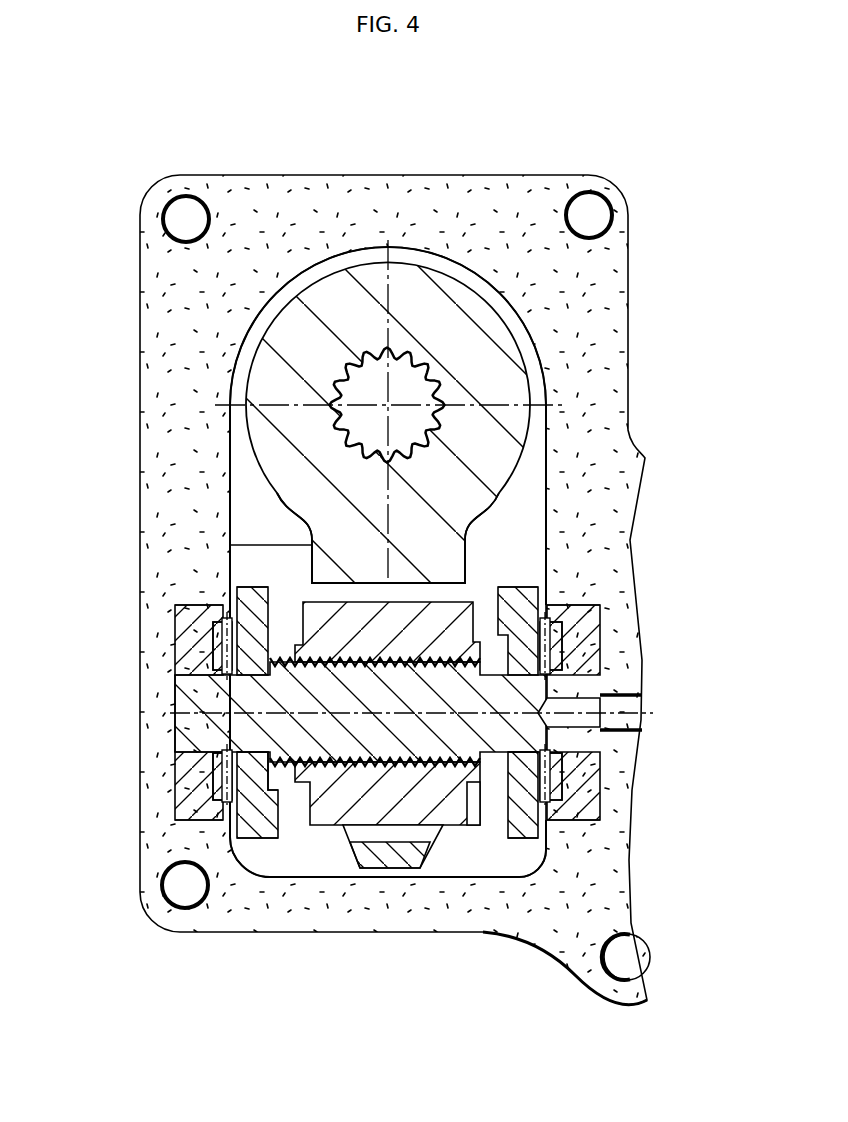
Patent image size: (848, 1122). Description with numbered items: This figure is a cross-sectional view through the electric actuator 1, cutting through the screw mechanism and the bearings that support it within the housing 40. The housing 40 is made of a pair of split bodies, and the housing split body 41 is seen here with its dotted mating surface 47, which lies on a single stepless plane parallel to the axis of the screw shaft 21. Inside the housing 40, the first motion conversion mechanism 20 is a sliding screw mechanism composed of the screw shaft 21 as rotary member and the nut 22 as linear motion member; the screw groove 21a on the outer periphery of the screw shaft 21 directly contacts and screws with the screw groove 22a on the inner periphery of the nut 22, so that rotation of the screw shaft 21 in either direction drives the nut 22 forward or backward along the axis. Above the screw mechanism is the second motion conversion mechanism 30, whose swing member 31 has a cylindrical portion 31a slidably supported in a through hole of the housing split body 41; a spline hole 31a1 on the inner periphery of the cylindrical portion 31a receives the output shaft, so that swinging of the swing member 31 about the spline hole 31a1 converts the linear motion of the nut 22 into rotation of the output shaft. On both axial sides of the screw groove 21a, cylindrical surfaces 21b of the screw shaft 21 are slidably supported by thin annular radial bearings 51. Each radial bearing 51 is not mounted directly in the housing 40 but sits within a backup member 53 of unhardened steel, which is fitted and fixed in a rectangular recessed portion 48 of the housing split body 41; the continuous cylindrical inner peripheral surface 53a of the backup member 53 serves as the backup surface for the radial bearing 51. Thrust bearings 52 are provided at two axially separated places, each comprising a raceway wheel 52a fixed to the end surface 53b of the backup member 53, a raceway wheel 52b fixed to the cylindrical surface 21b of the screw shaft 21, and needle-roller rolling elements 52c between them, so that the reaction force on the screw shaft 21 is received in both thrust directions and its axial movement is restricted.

The electric actuator 1 is at (416, 550).
The first motion conversion mechanism 20 is at (327, 828).
The screw shaft 21 is at (396, 759).
The screw groove 21a is at (355, 655).
The cylindrical surface 21b is at (216, 764).
The nut 22 is at (367, 820).
The screw groove 22a is at (325, 756).
The second motion conversion mechanism 30 is at (258, 470).
The swing member 31 is at (457, 354).
The cylindrical portion 31a is at (460, 330).
The spline hole 31a1 is at (352, 365).
The housing 40 is at (413, 173).
The housing split body 41 is at (486, 207).
The mating surface 47 is at (165, 312).
The rectangular recessed portion 48 is at (177, 607).
The radial bearing 51 is at (361, 679).
The thrust bearing 52 is at (392, 811).
The raceway wheel 52a is at (213, 778).
The raceway wheel 52b is at (252, 822).
The rolling element 52c is at (215, 775).
The backup member 53 is at (399, 701).
The inner peripheral surface 53a is at (187, 690).
The end surface 53b is at (245, 597).